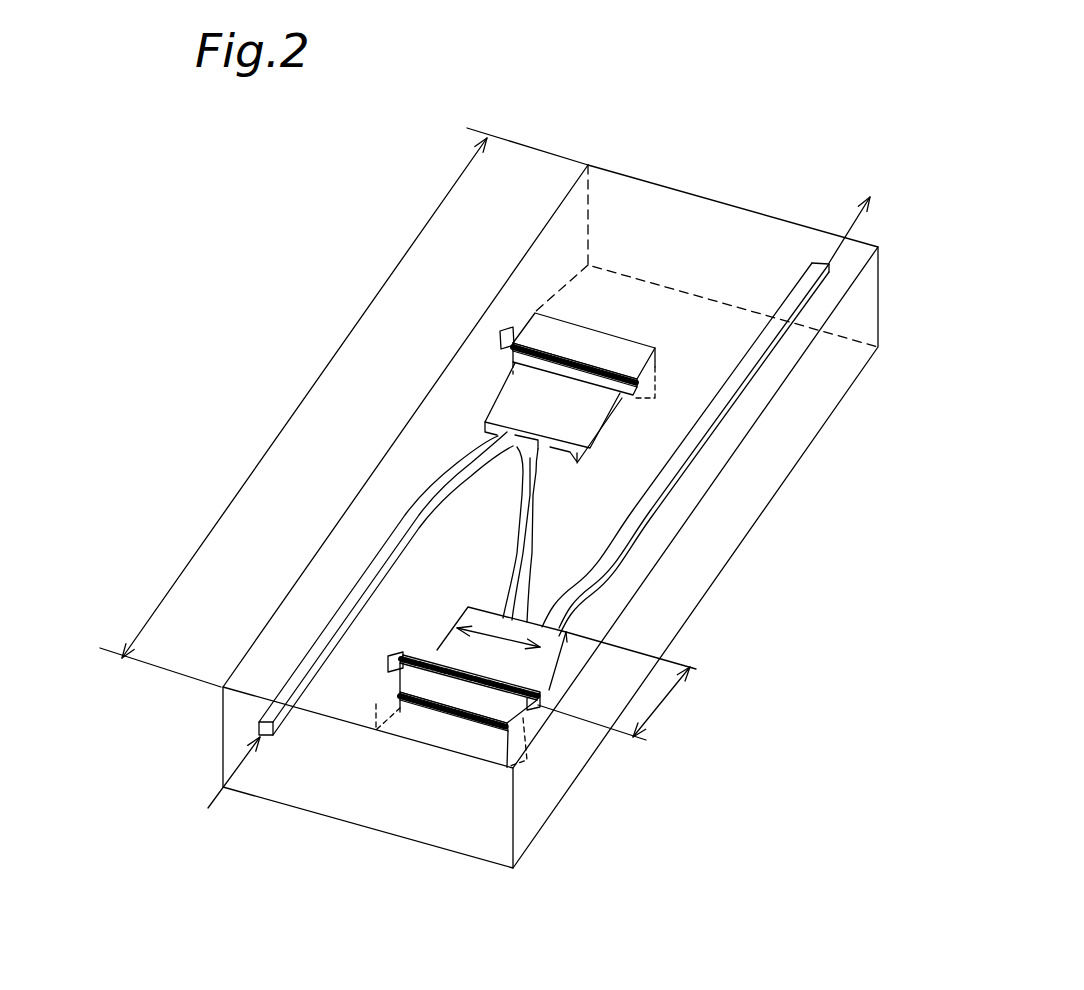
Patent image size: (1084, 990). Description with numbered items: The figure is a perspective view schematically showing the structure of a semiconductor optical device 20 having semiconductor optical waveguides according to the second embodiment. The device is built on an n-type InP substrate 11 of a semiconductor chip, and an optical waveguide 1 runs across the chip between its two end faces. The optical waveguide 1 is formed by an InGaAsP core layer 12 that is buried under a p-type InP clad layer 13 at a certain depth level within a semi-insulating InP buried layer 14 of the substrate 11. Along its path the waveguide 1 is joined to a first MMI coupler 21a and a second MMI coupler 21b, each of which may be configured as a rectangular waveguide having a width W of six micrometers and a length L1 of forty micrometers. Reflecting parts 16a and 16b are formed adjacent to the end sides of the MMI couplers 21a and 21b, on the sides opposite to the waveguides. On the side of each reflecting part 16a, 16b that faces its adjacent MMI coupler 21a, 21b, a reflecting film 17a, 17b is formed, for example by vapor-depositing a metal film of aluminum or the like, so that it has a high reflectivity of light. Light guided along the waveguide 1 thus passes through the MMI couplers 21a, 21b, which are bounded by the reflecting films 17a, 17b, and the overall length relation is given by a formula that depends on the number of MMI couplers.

The optical waveguide 1 is at (655, 502).
The n-type InP substrate 11 is at (577, 533).
The InGaAsP core layer 12 is at (183, 711).
The p-type InP clad layer 13 is at (266, 728).
The semi-insulating InP buried layer 14 is at (577, 516).
The reflecting part 16a is at (613, 254).
The reflecting part 16b is at (458, 781).
The reflecting film 17a is at (541, 304).
The reflecting film 17b is at (470, 817).
The semiconductor optical device 20 is at (516, 506).
The first MMI coupler 21a is at (496, 396).
The second MMI coupler 21b is at (397, 612).